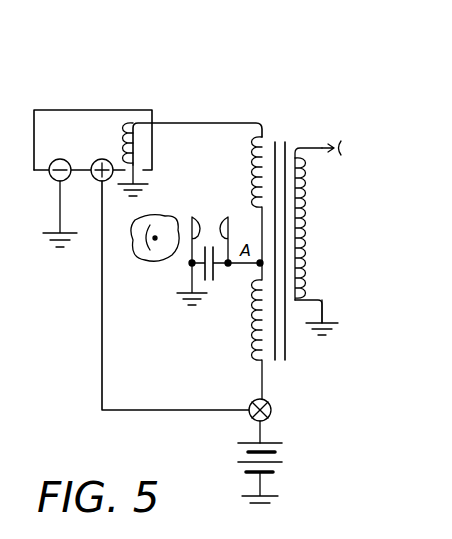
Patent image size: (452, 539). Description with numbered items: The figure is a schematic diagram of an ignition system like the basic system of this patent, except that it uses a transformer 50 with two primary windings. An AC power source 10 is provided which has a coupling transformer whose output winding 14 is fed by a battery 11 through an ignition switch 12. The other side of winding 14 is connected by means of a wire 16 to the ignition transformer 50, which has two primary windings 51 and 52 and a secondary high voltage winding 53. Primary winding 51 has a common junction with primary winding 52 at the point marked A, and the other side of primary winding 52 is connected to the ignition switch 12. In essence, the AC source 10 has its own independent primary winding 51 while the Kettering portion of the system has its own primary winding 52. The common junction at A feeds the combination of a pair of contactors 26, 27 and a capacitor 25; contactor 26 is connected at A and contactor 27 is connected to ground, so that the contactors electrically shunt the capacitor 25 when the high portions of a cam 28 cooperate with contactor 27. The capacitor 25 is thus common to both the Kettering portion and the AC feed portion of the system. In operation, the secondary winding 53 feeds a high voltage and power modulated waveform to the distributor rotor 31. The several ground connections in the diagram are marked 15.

The AC power source 10 is at (80, 137).
The battery 11 is at (275, 440).
The ignition switch 12 is at (272, 408).
The output winding 14 is at (143, 141).
The ground 15 is at (75, 232).
The wire 16 is at (218, 120).
The capacitor 25 is at (215, 275).
The contactor 26 is at (218, 222).
The contactor 27 is at (202, 218).
The cam 28 is at (140, 262).
The rotor 31 is at (357, 150).
The transformer 50 is at (284, 242).
The primary winding 51 is at (257, 178).
The primary winding 52 is at (258, 355).
The secondary high voltage winding 53 is at (306, 224).